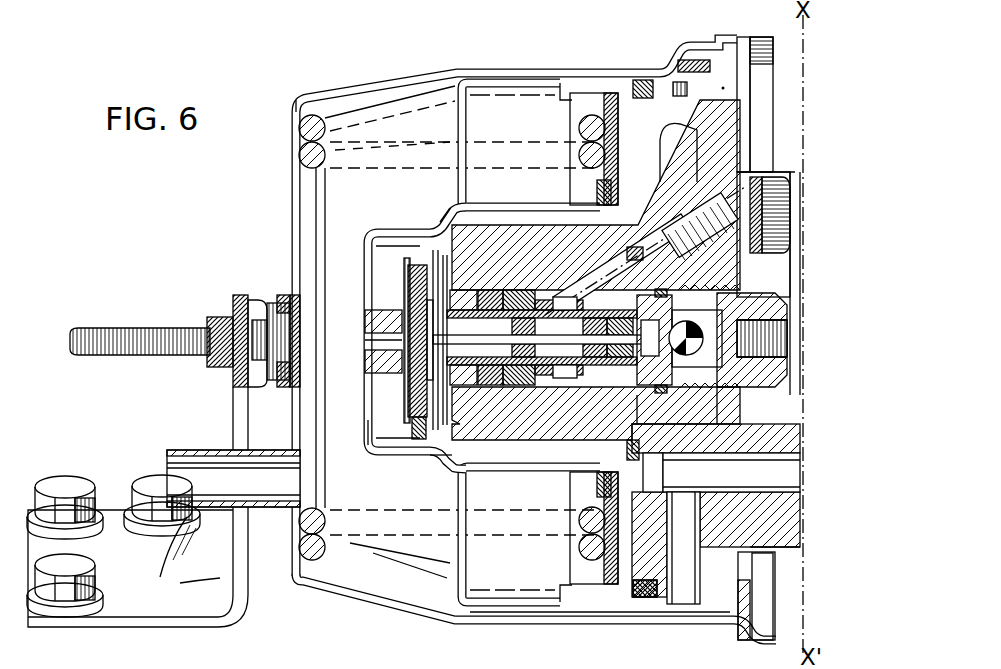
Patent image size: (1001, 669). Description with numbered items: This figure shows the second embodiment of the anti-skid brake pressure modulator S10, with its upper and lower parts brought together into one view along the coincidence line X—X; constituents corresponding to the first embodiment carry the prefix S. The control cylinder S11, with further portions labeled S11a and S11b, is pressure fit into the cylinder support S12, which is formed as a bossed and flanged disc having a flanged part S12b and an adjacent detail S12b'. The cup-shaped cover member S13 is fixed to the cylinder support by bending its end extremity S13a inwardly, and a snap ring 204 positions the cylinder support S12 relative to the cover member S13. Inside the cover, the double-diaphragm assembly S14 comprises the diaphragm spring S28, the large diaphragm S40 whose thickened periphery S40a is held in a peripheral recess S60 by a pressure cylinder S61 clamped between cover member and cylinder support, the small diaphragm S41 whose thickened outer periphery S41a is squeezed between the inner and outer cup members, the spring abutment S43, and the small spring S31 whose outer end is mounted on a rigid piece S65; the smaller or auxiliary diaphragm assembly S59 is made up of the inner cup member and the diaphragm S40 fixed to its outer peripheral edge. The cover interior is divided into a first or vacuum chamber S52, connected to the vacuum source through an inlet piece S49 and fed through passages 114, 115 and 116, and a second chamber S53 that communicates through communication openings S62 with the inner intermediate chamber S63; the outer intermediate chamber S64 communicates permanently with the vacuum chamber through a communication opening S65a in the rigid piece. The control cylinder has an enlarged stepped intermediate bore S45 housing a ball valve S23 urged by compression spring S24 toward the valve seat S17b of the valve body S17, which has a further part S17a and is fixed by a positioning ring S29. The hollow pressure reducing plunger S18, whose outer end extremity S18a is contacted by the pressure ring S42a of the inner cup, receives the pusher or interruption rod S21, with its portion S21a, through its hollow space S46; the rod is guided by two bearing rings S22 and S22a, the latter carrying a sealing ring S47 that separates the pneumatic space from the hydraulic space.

The anti-skid brake pressure modulator S10 is at (457, 66).
The control cylinder S11 is at (790, 374).
The threaded hole S11a is at (790, 327).
The thread S11b is at (787, 322).
The cylinder support S12 is at (757, 178).
The flanged part S12b is at (816, 182).
The bolt end S12b' is at (797, 180).
The cover member S13 is at (742, 56).
The end extremity S13a is at (292, 250).
The double-diaphragm assembly S14 is at (398, 230).
The valve body S17 is at (655, 392).
The seal lip S17a is at (633, 378).
The valve seat S17b is at (636, 400).
The hollow plunger S18 is at (600, 323).
The outer end extremity S18a is at (478, 340).
The pusher rod S21 is at (495, 395).
The hub block S21a is at (652, 305).
The bearing ring S22 is at (548, 345).
The bearing ring S22a is at (647, 262).
The ball valve S23 is at (686, 356).
The compression spring S24 is at (740, 388).
The diaphragm spring S28 is at (305, 188).
The positioning ring S29 is at (666, 185).
The small spring S31 is at (372, 445).
The large diaphragm S40 is at (572, 88).
The thickened periphery S40a is at (648, 78).
The small diaphragm S41 is at (392, 238).
The thickened outer periphery S41a is at (450, 220).
The pressure ring S42a is at (458, 290).
The spring abutment S43 is at (405, 380).
The intermediate bore S45 is at (700, 315).
The hollow space S46 is at (572, 395).
The sealing ring S47 is at (606, 362).
The inlet piece S49 is at (268, 508).
The first chamber S52 is at (393, 113).
The second chamber S53 is at (630, 447).
The auxiliary diaphragm assembly S59 is at (513, 478).
The peripheral recess S60 is at (672, 64).
The pressure cylinder S61 is at (525, 76).
The communication openings S62 is at (442, 455).
The inner intermediate chamber S63 is at (420, 440).
The outer intermediate chamber S64 is at (395, 297).
The rigid piece S65 is at (400, 350).
The communication opening S65a is at (380, 340).
The snap ring 204 is at (770, 50).
The passage 114 is at (790, 478).
The passage 115 is at (697, 607).
The passage 116 is at (612, 608).